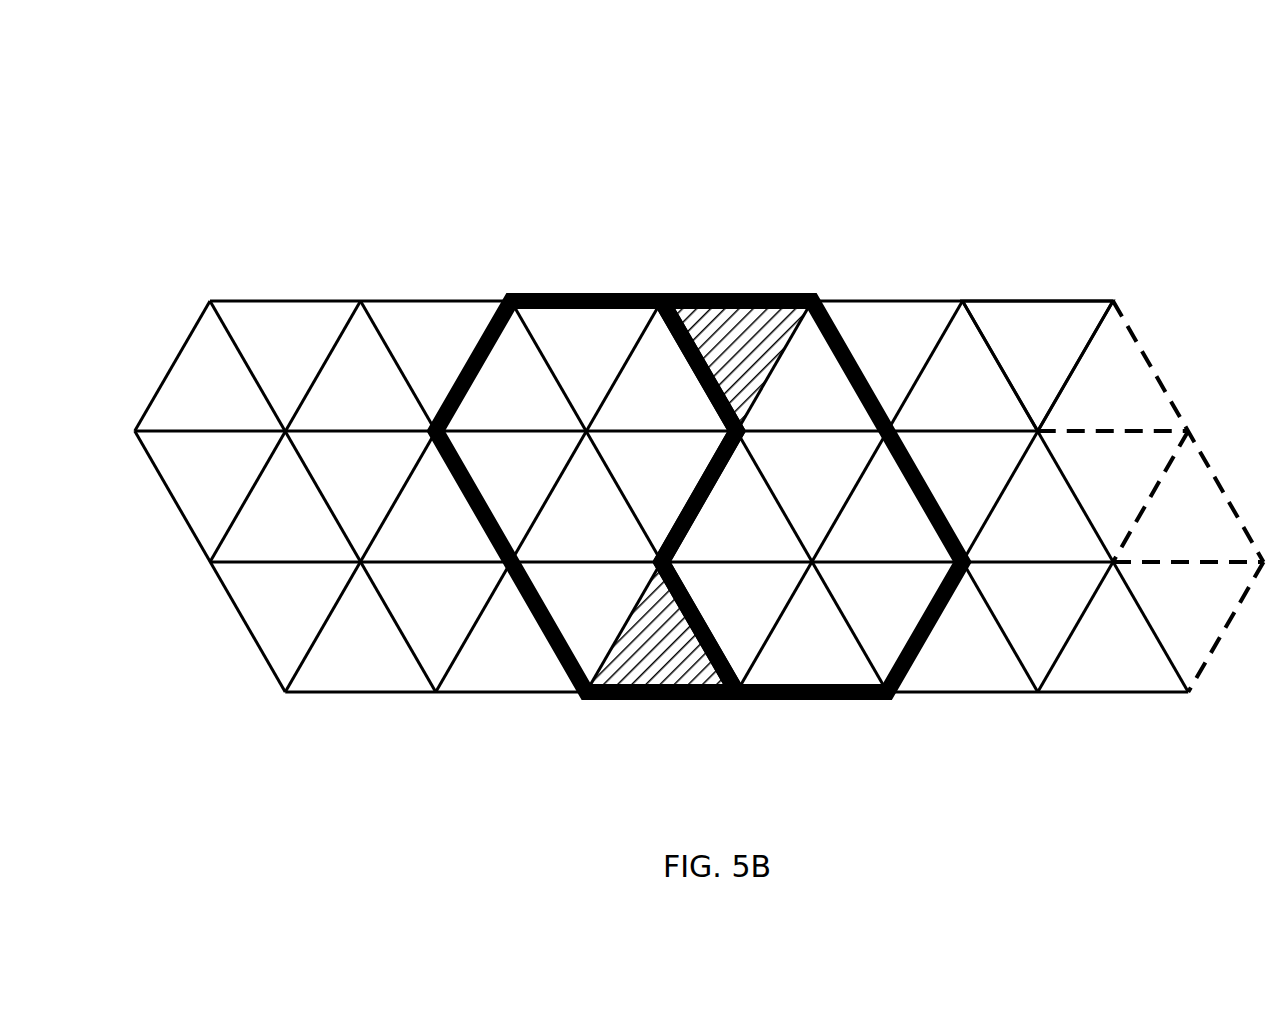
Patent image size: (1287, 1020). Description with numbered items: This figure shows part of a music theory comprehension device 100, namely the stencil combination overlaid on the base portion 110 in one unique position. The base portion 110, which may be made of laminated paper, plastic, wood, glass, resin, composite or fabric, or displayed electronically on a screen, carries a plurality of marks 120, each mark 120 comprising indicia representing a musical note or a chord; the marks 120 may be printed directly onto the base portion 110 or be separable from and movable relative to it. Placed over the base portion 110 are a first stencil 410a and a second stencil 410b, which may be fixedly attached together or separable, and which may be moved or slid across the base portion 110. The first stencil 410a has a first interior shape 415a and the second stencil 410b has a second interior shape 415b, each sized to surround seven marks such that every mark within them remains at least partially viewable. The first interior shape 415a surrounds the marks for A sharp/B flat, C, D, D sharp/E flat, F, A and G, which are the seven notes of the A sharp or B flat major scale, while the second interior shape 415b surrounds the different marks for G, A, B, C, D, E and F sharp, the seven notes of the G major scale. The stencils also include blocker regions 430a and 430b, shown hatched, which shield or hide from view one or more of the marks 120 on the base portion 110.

The music theory comprehension device 100 is at (668, 454).
The base portion 110 is at (335, 264).
The mark 120 is at (1018, 302).
The first stencil 410a is at (525, 219).
The second stencil 410b is at (873, 764).
The first interior shape 415a is at (612, 266).
The second interior shape 415b is at (770, 726).
The blocker region 430a is at (728, 320).
The blocker region 430b is at (672, 666).